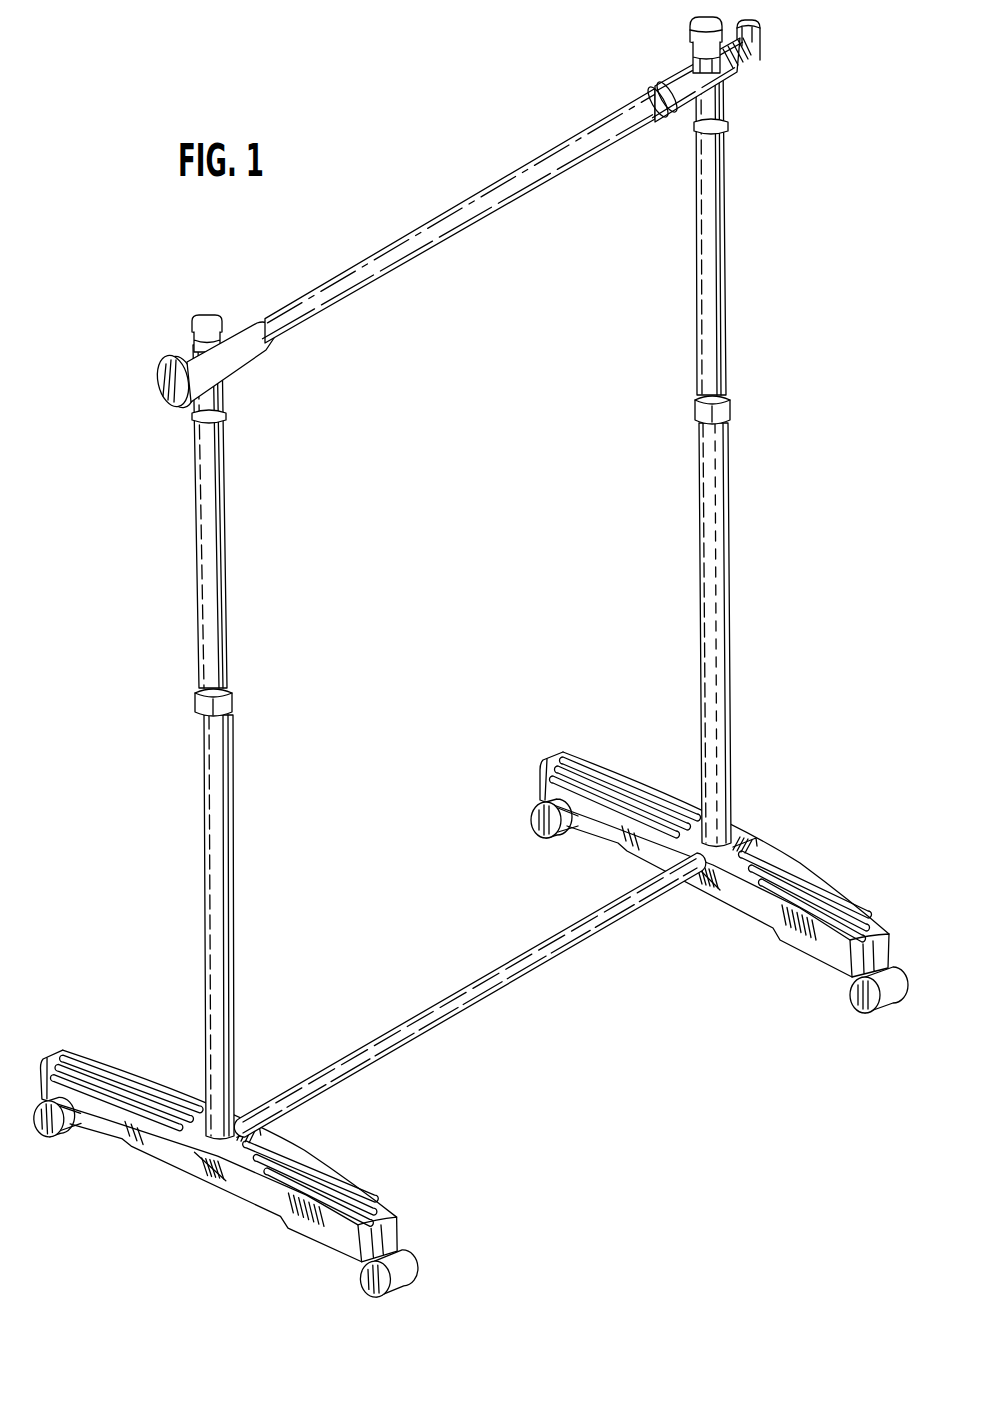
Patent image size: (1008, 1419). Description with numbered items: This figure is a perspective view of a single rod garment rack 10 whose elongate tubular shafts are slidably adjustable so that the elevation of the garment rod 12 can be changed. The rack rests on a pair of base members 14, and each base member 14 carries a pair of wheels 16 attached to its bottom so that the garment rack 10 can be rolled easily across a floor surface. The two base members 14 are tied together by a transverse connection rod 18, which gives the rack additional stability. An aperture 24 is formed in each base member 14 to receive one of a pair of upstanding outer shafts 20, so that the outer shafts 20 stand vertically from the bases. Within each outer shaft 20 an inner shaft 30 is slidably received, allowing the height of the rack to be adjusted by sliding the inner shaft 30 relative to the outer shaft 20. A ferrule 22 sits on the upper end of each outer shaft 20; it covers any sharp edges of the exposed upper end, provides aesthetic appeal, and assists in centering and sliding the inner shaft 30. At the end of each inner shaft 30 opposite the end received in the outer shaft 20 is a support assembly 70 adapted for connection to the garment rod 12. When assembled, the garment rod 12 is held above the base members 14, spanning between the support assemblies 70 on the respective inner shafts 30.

The garment rack 10 is at (737, 227).
The garment rod 12 is at (520, 173).
The base member 14 is at (787, 857).
The wheel 16 is at (902, 963).
The transverse connection rod 18 is at (535, 970).
The outer shaft 20 is at (727, 660).
The ferrule 22 is at (731, 410).
The aperture 24 is at (732, 838).
The inner shaft 30 is at (723, 307).
The support assembly 70 is at (733, 82).